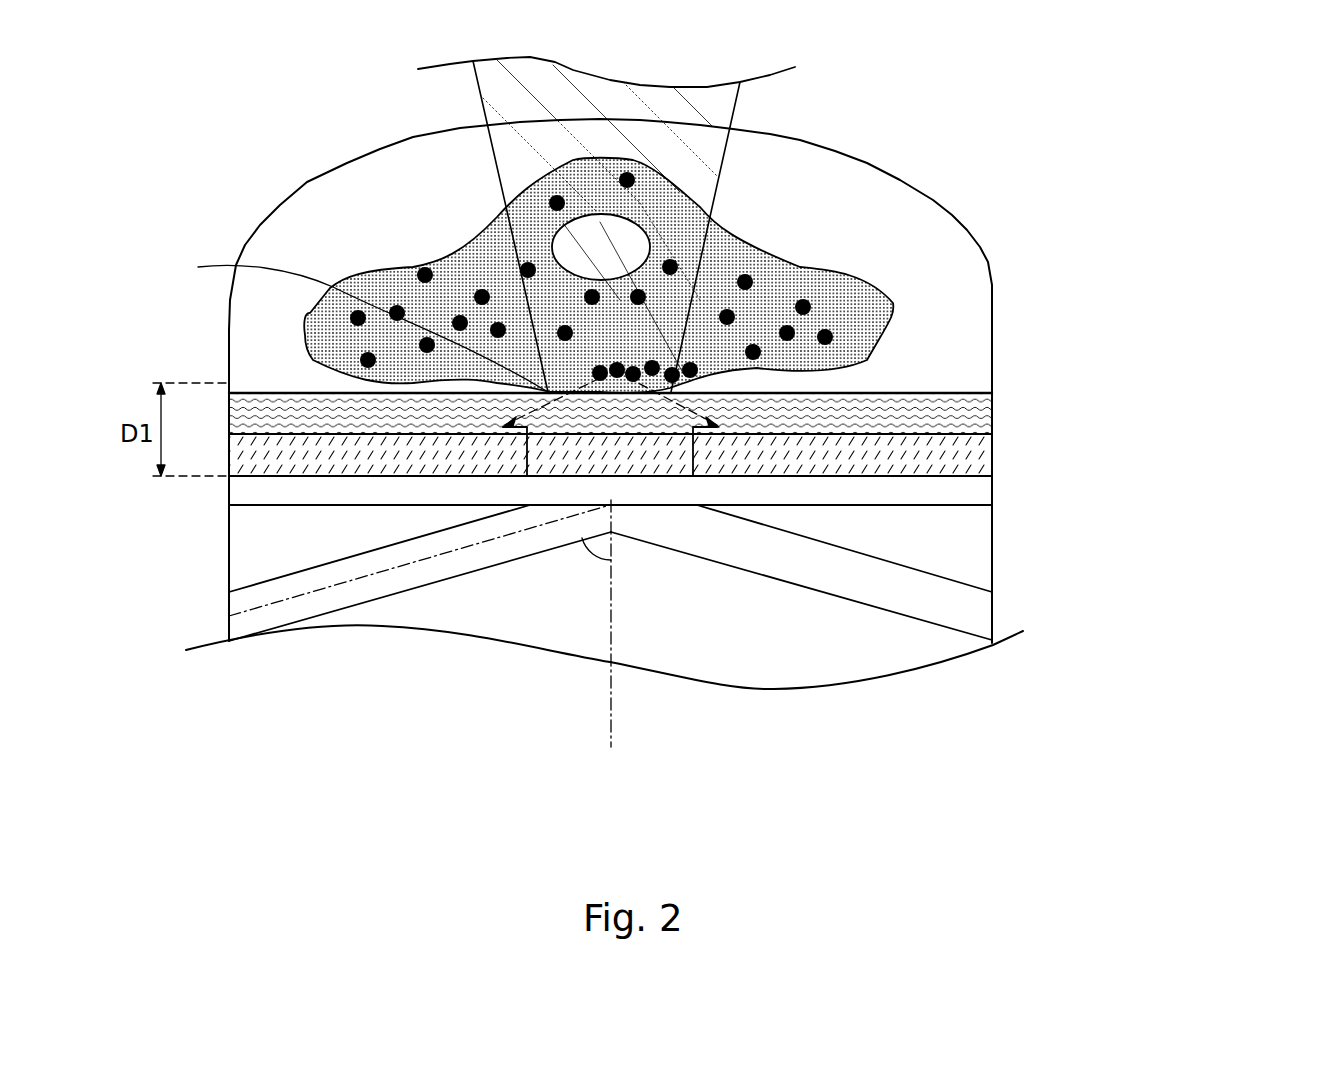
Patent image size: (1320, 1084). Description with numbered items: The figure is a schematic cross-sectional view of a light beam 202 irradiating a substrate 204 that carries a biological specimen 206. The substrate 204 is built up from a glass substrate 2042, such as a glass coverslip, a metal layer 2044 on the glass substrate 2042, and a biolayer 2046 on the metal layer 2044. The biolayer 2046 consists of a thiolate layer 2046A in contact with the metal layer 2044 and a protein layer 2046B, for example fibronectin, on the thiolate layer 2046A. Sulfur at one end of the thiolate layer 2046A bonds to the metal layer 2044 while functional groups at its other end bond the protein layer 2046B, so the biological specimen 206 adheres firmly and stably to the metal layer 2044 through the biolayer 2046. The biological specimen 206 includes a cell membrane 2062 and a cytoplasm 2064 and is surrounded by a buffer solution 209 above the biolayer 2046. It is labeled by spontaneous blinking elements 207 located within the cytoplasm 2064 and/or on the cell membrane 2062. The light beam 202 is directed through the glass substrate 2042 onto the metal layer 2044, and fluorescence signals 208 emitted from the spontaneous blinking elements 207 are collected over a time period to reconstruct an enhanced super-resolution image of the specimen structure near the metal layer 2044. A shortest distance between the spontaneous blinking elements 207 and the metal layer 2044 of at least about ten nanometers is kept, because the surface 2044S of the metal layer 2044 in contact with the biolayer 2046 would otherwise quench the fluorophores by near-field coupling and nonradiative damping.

The light beam 202 is at (303, 582).
The substrate 204 is at (736, 533).
The glass substrate 2042 is at (968, 553).
The metal layer 2044 is at (977, 495).
The surface of the metal layer 2044S is at (285, 476).
The biolayer 2046 is at (719, 426).
The thiolate layer 2046A is at (980, 458).
The protein layer 2046B is at (988, 415).
The biological specimen 206 is at (795, 275).
The cell membrane 2062 is at (870, 382).
The cytoplasm 2064 is at (893, 318).
The spontaneous blinking elements 207 is at (344, 325).
The fluorescence signals 208 is at (725, 108).
The buffer solution 209 is at (307, 210).